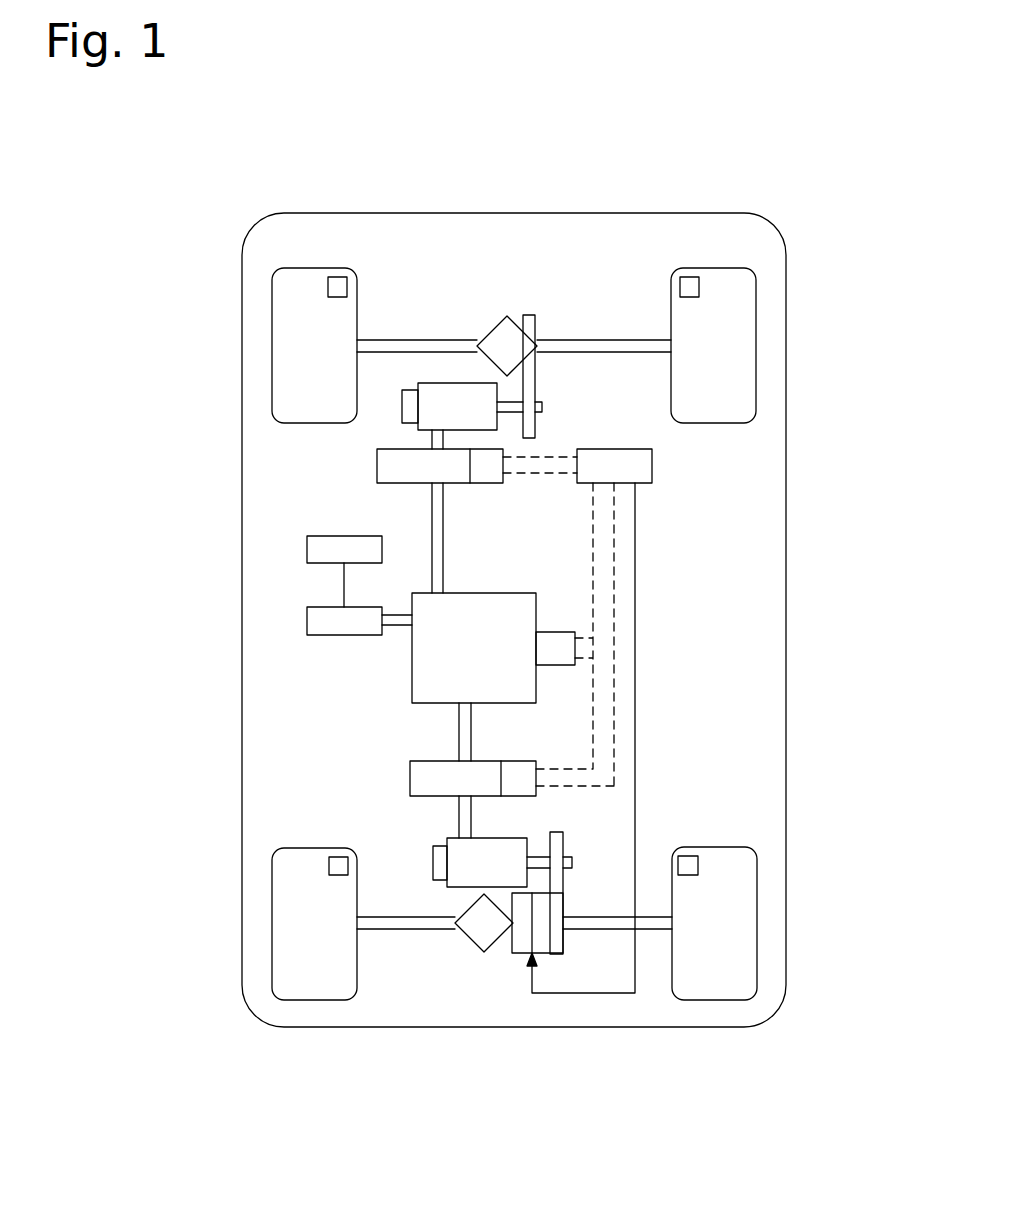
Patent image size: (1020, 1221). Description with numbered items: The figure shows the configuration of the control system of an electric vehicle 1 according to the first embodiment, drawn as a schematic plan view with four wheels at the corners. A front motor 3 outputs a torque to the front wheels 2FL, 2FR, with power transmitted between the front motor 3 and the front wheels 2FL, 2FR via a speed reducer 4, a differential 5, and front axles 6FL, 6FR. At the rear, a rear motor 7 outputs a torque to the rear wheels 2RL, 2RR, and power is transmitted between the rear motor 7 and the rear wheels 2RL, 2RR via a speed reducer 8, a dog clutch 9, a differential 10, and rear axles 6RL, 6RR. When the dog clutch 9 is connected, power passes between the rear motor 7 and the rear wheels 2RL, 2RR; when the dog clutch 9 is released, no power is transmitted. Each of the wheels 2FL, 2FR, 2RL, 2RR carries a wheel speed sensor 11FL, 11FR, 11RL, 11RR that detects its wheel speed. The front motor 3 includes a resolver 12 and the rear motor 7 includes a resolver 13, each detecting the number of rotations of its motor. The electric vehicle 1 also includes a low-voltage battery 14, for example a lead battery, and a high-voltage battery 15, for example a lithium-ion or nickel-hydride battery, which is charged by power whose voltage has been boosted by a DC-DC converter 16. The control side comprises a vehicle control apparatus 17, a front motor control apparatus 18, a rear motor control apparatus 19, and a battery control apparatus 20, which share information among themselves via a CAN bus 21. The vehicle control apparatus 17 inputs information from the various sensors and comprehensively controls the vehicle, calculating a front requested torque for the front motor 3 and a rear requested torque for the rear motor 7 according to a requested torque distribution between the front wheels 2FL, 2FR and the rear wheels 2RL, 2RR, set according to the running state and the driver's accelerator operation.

The electric vehicle 1 is at (791, 192).
The front wheel 2FL is at (272, 348).
The front wheel 2FR is at (756, 350).
The rear wheel 2RL is at (272, 924).
The rear wheel 2RR is at (757, 930).
The front motor 3 is at (460, 383).
The speed reducer 4 is at (548, 322).
The differential 5 is at (490, 332).
The front axle 6FL is at (403, 340).
The front axle 6FR is at (618, 340).
The rear axle 6RL is at (402, 929).
The rear axle 6RR is at (653, 929).
The rear motor 7 is at (458, 838).
The speed reducer 8 is at (585, 895).
The dog clutch 9 is at (516, 968).
The differential 10 is at (468, 940).
The wheel speed sensor 11FL is at (328, 288).
The wheel speed sensor 11FR is at (699, 287).
The wheel speed sensor 11RL is at (329, 863).
The wheel speed sensor 11RR is at (698, 865).
The resolver 12 is at (402, 405).
The resolver 13 is at (433, 867).
The low-voltage battery 14 is at (307, 548).
The high-voltage battery 15 is at (307, 620).
The DC-DC converter 16 is at (412, 675).
The vehicle control apparatus 17 is at (652, 464).
The front motor control apparatus 18 is at (377, 467).
The rear motor control apparatus 19 is at (556, 632).
The battery control apparatus 20 is at (410, 780).
The CAN bus 21 is at (593, 752).